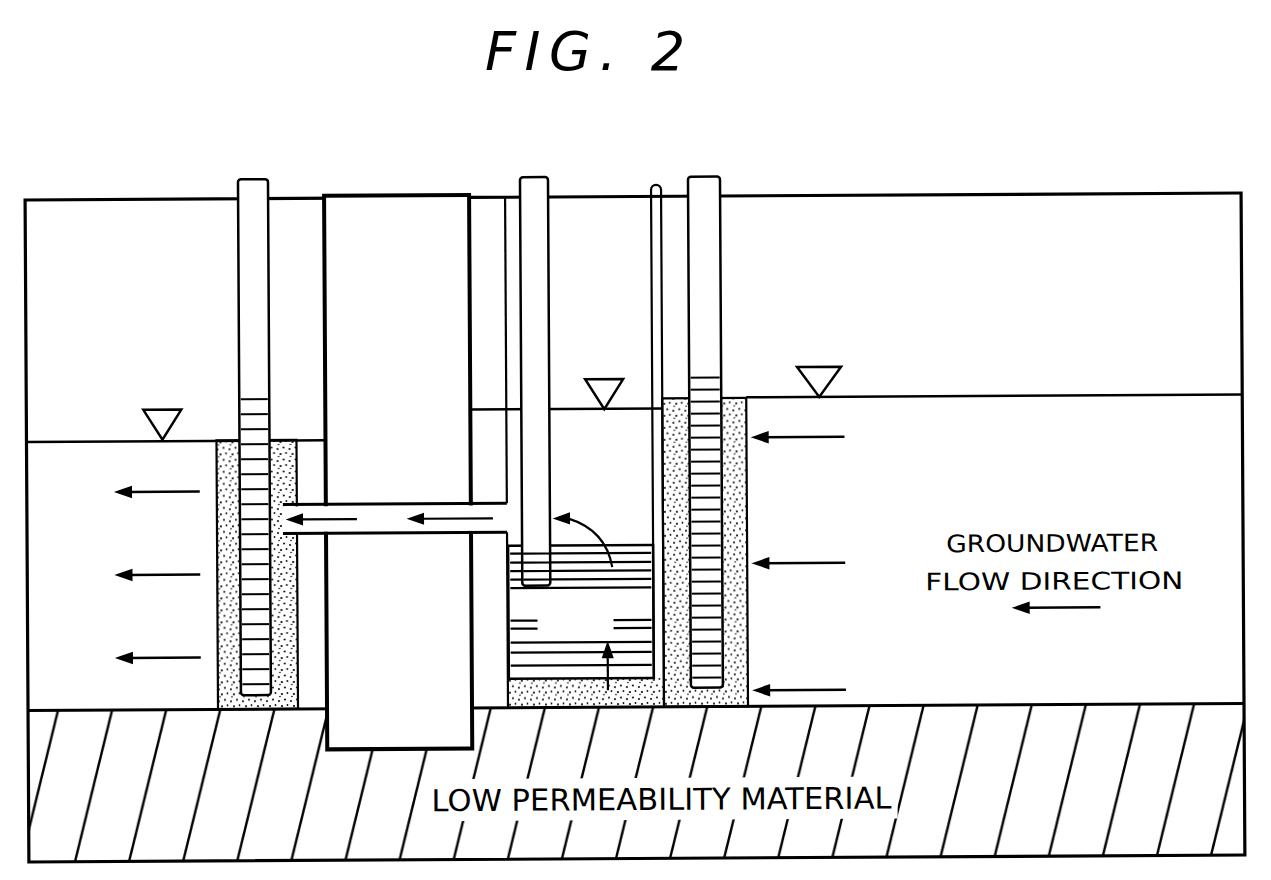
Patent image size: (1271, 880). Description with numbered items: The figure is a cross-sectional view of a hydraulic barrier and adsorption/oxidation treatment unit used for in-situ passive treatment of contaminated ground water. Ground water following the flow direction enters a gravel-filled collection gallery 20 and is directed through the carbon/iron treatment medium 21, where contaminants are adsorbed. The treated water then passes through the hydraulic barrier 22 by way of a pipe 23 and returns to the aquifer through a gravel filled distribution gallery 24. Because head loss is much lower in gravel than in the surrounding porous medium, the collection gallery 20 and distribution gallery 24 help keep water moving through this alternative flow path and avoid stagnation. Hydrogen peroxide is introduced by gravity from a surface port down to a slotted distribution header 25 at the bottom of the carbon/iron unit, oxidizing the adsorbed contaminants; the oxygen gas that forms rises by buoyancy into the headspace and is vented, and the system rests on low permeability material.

The gravel-filled collection gallery 20 is at (738, 398).
The carbon/iron treatment medium 21 is at (612, 545).
The hydraulic barrier 22 is at (370, 194).
The pipe 23 is at (552, 197).
The gravel filled distribution gallery 24 is at (222, 438).
The slotted distribution header 25 is at (665, 186).